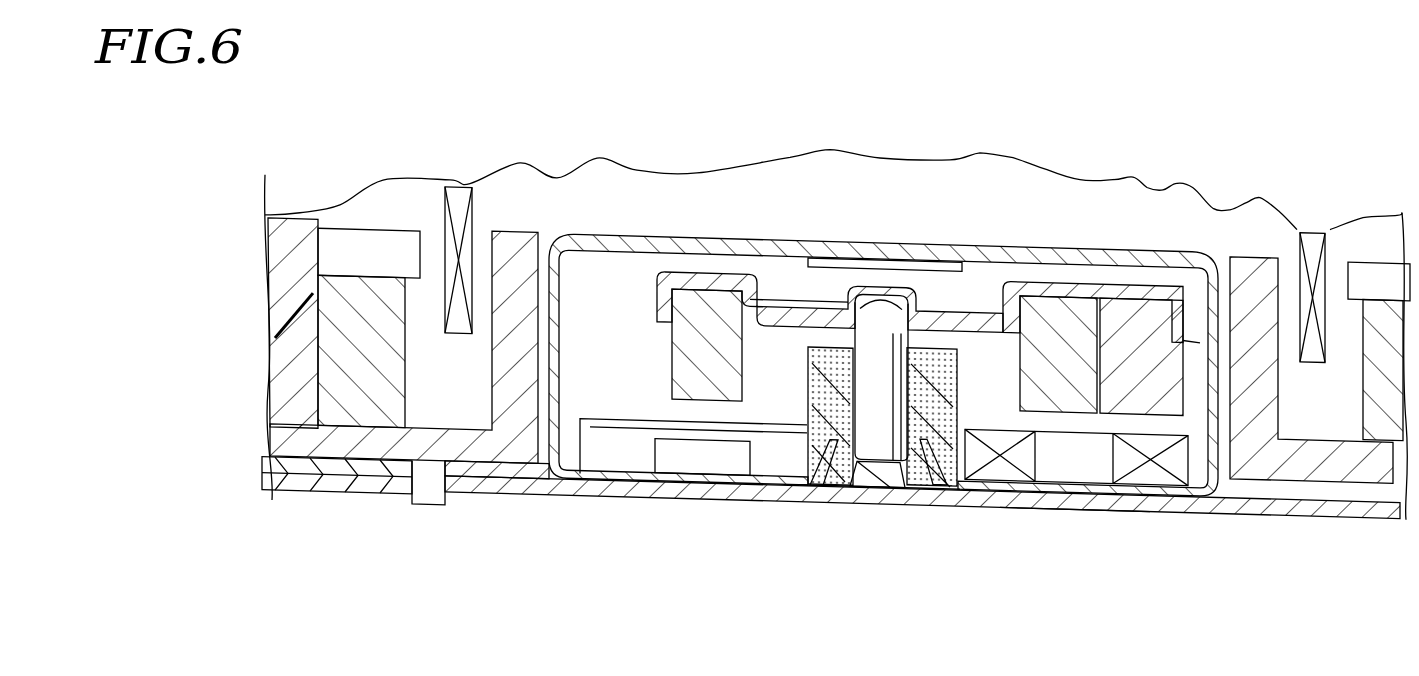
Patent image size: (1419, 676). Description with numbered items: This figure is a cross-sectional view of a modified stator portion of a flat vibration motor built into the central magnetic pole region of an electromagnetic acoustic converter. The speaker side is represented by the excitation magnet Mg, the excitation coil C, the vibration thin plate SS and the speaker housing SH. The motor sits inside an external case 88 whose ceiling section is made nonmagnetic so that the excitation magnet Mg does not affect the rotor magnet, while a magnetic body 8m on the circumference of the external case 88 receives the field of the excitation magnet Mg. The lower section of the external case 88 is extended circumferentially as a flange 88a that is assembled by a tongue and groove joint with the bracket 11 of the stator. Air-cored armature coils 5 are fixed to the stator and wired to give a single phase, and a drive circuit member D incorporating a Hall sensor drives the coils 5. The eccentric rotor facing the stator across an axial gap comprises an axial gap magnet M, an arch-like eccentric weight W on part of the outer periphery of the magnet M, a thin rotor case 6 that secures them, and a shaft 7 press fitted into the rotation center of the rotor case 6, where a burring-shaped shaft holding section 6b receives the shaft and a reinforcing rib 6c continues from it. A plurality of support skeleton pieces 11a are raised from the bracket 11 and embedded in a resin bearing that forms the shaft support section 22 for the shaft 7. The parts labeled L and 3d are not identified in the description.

The vibration thin plate SS is at (845, 147).
The speaker housing SH is at (283, 314).
The excitation magnet Mg is at (356, 403).
The excitation coil C is at (458, 210).
The magnetic body 8m is at (527, 250).
The external case 88 is at (657, 232).
The flange 88a is at (468, 483).
The bracket 11 is at (577, 486).
The base 3d is at (1068, 480).
The reinforcing rib 6c is at (790, 294).
The thin plate L is at (873, 270).
The shaft holding section 6b is at (888, 290).
The shaft 7 is at (878, 423).
The support skeleton pieces 11a is at (922, 435).
The shaft support section 22 is at (808, 372).
The drive circuit member D is at (703, 453).
The axial gap magnet M is at (1003, 270).
The rotor case 6 is at (1062, 298).
The air-cored armature coil 5 is at (998, 463).
The eccentric weight W is at (1200, 327).